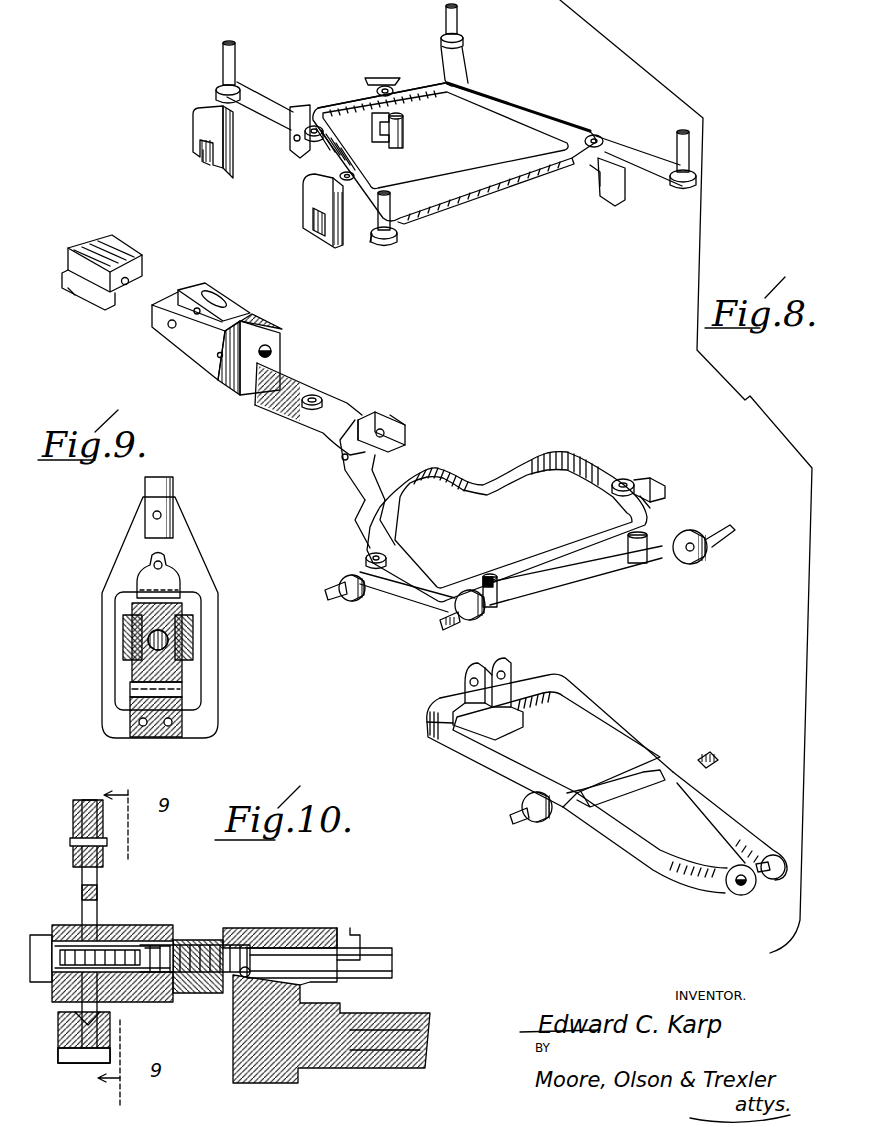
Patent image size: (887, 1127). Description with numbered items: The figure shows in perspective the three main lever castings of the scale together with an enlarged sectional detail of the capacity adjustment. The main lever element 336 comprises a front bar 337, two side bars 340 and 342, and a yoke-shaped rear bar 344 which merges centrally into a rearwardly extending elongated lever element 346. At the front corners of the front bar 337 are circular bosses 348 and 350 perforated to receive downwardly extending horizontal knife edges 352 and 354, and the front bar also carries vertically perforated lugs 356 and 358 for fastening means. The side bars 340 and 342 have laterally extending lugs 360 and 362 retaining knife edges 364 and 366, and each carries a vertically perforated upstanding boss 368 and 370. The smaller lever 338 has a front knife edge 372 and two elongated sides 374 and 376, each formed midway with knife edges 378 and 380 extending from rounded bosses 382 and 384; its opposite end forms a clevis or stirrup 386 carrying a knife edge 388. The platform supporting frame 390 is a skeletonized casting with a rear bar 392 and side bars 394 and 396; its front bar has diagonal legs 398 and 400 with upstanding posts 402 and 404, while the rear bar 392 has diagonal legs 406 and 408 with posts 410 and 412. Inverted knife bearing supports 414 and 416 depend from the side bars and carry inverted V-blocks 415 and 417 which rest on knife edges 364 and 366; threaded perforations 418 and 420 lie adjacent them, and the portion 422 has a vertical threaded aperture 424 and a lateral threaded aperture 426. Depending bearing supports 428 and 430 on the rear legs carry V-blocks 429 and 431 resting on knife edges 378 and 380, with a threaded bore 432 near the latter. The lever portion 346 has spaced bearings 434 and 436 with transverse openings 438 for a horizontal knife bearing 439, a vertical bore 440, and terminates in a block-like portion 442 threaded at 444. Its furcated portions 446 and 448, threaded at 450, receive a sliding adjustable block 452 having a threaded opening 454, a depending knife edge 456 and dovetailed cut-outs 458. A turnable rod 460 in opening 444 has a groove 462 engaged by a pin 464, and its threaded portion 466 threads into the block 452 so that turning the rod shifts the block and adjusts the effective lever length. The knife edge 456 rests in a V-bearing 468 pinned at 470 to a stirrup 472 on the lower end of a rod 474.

In FIG. 8, the lever element 336 is at (513, 458).
In FIG. 8, the front bar 337 is at (550, 585).
In FIG. 8, the lever 338 is at (608, 703).
In FIG. 8, the side bar 340 is at (360, 600).
In FIG. 8, the side bar 342 is at (620, 478).
In FIG. 8, the yoke-shaped rear bar 344 is at (360, 505).
In FIG. 8, the elongated lever element 346 is at (340, 405).
In FIG. 10, the elongated lever element 346 is at (370, 1068).
In FIG. 8, the circular boss 348 is at (482, 610).
In FIG. 8, the circular boss 350 is at (698, 562).
In FIG. 8, the knife edge 352 is at (450, 625).
In FIG. 8, the knife edge 354 is at (718, 530).
In FIG. 8, the vertically perforated lug 356 is at (510, 557).
In FIG. 8, the vertically perforated lug 358 is at (628, 548).
In FIG. 8, the laterally extending lug 360 is at (352, 600).
In FIG. 8, the laterally extending lug 362 is at (655, 500).
In FIG. 8, the knife edge 364 is at (335, 580).
In FIG. 8, the knife edge 366 is at (660, 482).
In FIG. 8, the upstanding boss 368 is at (388, 558).
In FIG. 8, the upstanding boss 370 is at (640, 478).
In FIG. 8, the knife edge 372 is at (760, 880).
In FIG. 8, the elongated side 374 is at (580, 835).
In FIG. 8, the elongated side 376 is at (705, 782).
In FIG. 8, the knife edge 378 is at (520, 812).
In FIG. 8, the knife edge 380 is at (710, 750).
In FIG. 8, the rounded boss 382 is at (520, 800).
In FIG. 8, the rounded boss 384 is at (670, 755).
In FIG. 8, the clevis or stirrup 386 is at (510, 728).
In FIG. 8, the knife edge 388 is at (522, 678).
In FIG. 8, the platform supporting frame 390 is at (487, 173).
In FIG. 8, the rear bar 392 is at (352, 80).
In FIG. 8, the side bar 394 is at (322, 150).
In FIG. 8, the side bar 396 is at (500, 95).
In FIG. 8, the diagonal leg 398 is at (400, 225).
In FIG. 8, the diagonal leg 400 is at (665, 185).
In FIG. 8, the upstanding post 402 is at (378, 215).
In FIG. 8, the upstanding post 404 is at (695, 150).
In FIG. 8, the diagonal leg 406 is at (290, 70).
In FIG. 8, the diagonal leg 408 is at (460, 62).
In FIG. 8, the upstanding post 410 is at (222, 57).
In FIG. 8, the upstanding post 412 is at (460, 18).
In FIG. 8, the knife bearing support 414 is at (310, 200).
In FIG. 8, the inverted V-block 415 is at (312, 220).
In FIG. 8, the knife bearing support 416 is at (612, 195).
In FIG. 8, the inverted V-block 417 is at (595, 188).
In FIG. 8, the threaded perforation 418 is at (358, 178).
In FIG. 8, the threaded perforation 420 is at (598, 135).
In FIG. 8, the portion of side bar 422 is at (300, 110).
In FIG. 8, the vertical threaded aperture 424 is at (318, 123).
In FIG. 8, the lateral threaded aperture 426 is at (292, 142).
In FIG. 8, the knife bearing support 428 is at (198, 118).
In FIG. 8, the inverted V-block 429 is at (205, 155).
In FIG. 8, the knife bearing support 430 is at (407, 134).
In FIG. 8, the inverted V-block 431 is at (380, 135).
In FIG. 8, the vertically threaded bore 432 is at (385, 88).
In FIG. 8, the bearing 434 is at (365, 420).
In FIG. 8, the bearing 436 is at (398, 425).
In FIG. 8, the transverse opening 438 is at (392, 437).
In FIG. 8, the knife bearing 439 is at (360, 458).
In FIG. 8, the vertical bore 440 is at (320, 390).
In FIG. 8, the block-like portion 442 is at (228, 378).
In FIG. 10, the block-like portion 442 is at (245, 925).
In FIG. 8, the threaded opening 444 is at (272, 348).
In FIG. 10, the threaded opening 444 is at (275, 938).
In FIG. 8, the furcated portion 446 is at (165, 305).
In FIG. 9, the furcated portion 446 is at (130, 622).
In FIG. 8, the furcated portion 448 is at (205, 298).
In FIG. 9, the furcated portion 448 is at (195, 625).
In FIG. 10, the furcated portion 448 is at (45, 935).
In FIG. 8, the transverse threading 450 is at (168, 330).
In FIG. 8, the adjustable block 452 is at (100, 235).
In FIG. 9, the adjustable block 452 is at (157, 642).
In FIG. 10, the adjustable block 452 is at (175, 945).
In FIG. 8, the threaded opening 454 is at (128, 277).
In FIG. 9, the threaded opening 454 is at (135, 582).
In FIG. 10, the threaded opening 454 is at (108, 945).
In FIG. 8, the depending knife edge 456 is at (85, 300).
In FIG. 10, the depending knife edge 456 is at (60, 1010).
In FIG. 8, the dovetailed cut-out 458 is at (65, 255).
In FIG. 10, the turnable rod 460 is at (392, 980).
In FIG. 10, the groove 462 is at (240, 952).
In FIG. 8, the pin 464 is at (216, 358).
In FIG. 10, the pin 464 is at (245, 990).
In FIG. 10, the threaded portion 466 is at (160, 975).
In FIG. 9, the V-bearing 468 is at (185, 700).
In FIG. 10, the V-bearing 468 is at (58, 1030).
In FIG. 9, the pin 470 is at (130, 727).
In FIG. 9, the stirrup 472 is at (205, 728).
In FIG. 9, the rod 474 is at (148, 492).